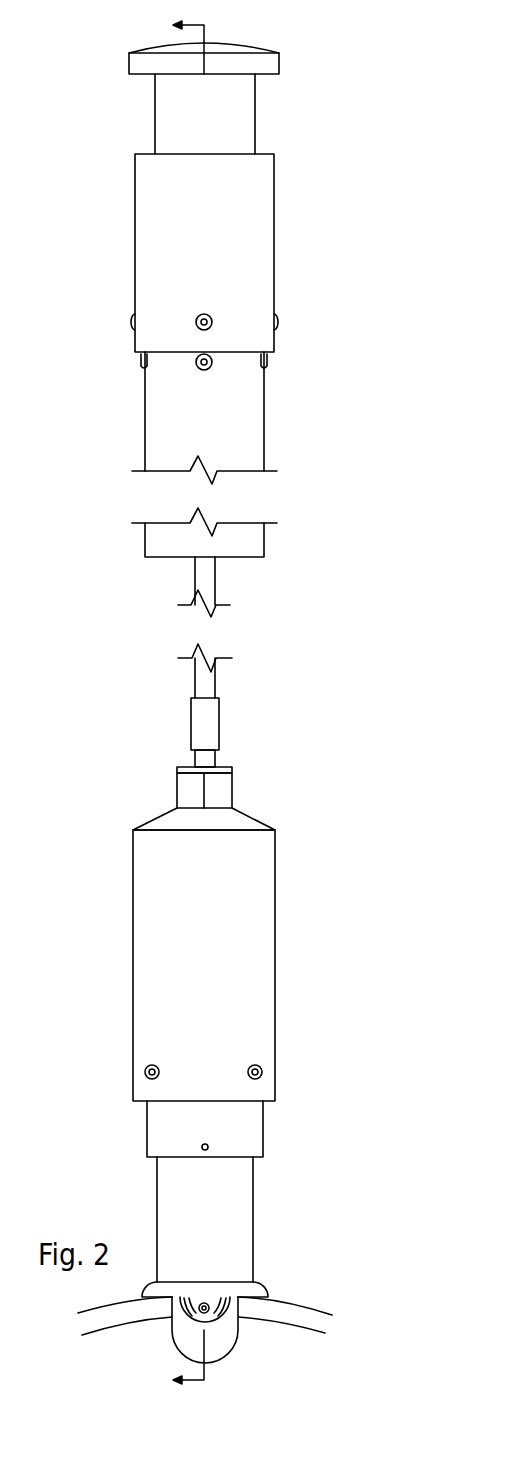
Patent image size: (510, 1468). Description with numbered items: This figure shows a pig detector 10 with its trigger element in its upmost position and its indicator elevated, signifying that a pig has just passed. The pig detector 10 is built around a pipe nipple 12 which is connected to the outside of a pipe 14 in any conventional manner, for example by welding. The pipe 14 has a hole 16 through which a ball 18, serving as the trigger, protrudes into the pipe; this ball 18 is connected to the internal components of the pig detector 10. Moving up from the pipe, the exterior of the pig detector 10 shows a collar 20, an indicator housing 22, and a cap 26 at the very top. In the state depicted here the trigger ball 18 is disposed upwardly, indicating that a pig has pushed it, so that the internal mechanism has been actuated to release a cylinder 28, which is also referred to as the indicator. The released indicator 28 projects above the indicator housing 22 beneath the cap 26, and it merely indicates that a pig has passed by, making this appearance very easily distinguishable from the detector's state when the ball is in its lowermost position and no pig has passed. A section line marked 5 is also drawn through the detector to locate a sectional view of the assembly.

The section line 5- 5 is at (198, 703).
The pig detector 10 is at (302, 578).
The pipe nipple 12 is at (238, 1230).
The pipe 14 is at (283, 1302).
The hole 16 is at (237, 1315).
The ball 18 is at (198, 1315).
The collar 20 is at (255, 1128).
The indicator housing 22 is at (145, 215).
The cap 26 is at (240, 48).
The cylinder 28 is at (243, 117).